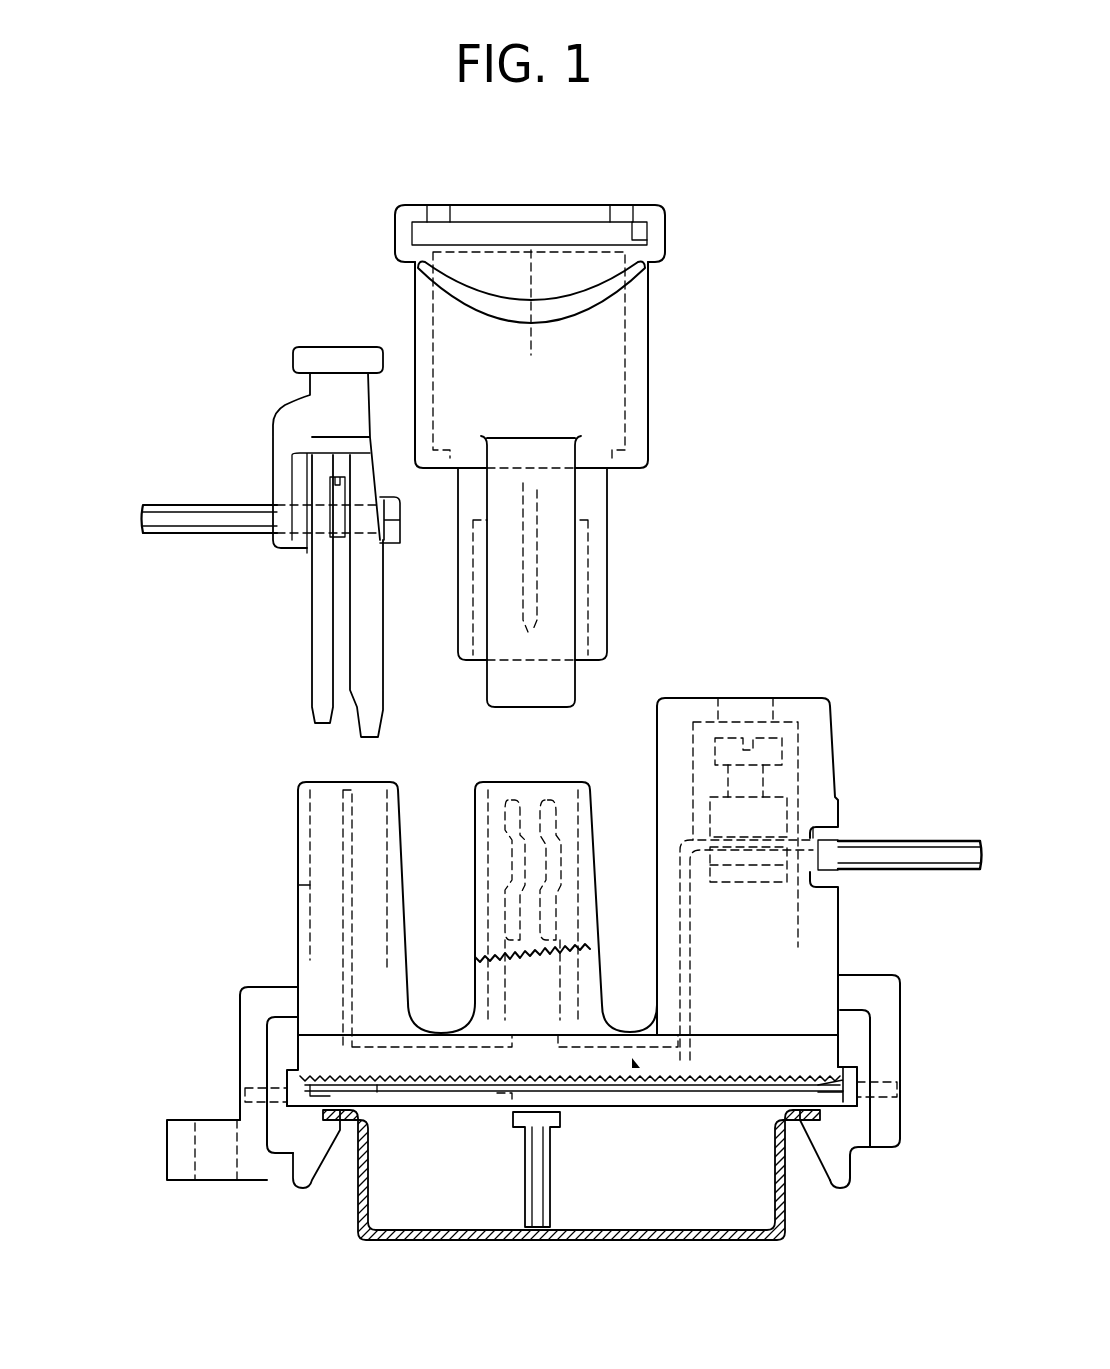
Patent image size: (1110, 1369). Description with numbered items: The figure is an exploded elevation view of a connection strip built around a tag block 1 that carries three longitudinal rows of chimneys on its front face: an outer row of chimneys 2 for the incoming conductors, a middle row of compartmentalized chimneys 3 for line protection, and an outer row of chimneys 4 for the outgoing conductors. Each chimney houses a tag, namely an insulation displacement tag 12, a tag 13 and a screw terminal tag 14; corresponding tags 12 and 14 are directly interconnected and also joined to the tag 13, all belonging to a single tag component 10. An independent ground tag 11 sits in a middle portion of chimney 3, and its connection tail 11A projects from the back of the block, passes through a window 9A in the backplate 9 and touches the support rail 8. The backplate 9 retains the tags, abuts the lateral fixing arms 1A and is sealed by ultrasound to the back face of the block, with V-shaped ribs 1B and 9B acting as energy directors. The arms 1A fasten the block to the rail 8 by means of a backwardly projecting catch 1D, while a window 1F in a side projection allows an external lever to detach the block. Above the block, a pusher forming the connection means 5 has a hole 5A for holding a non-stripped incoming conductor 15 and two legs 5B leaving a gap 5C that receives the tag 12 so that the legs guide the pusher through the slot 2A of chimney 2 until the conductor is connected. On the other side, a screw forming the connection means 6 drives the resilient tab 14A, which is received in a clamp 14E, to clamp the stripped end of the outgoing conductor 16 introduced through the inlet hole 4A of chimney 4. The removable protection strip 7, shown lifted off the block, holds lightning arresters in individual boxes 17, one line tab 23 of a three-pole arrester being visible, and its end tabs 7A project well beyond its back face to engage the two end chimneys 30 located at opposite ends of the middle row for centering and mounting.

The tag block 1 is at (299, 941).
The lateral fixing arms 1A is at (250, 1038).
The V-shaped ribs 1B is at (377, 1086).
The catch 1D is at (307, 1183).
The window 1F is at (212, 1167).
The chimneys 2 is at (298, 913).
The slot 2A is at (302, 867).
The chimneys 3 is at (473, 912).
The chimneys 4 is at (830, 914).
The inlet hole 4A is at (836, 831).
The connection means 5 is at (265, 449).
The hole 5A is at (367, 538).
The legs 5B is at (357, 655).
The gap 5C is at (338, 600).
The connection means 6 is at (783, 753).
The protection strip 7 is at (646, 384).
The end tabs 7A is at (558, 688).
The support rail 8 is at (689, 1227).
The backplate 9 is at (443, 1096).
The window 9A is at (507, 1098).
The V-shaped ribs 9B is at (823, 1083).
The tag component 10 is at (648, 1113).
The ground tag 11 is at (557, 1120).
The connection tail 11A is at (537, 1190).
The insulation displacement tag 12 is at (343, 812).
The tag 13 is at (513, 842).
The screw terminal tag 14 is at (701, 839).
The resilient tab 14A is at (747, 850).
The clamp 14E is at (788, 808).
The incoming conductor 15 is at (192, 516).
The outgoing conductor 16 is at (933, 842).
The box 17 is at (606, 549).
The line tab 23 is at (537, 593).
The end chimneys 30 is at (478, 988).